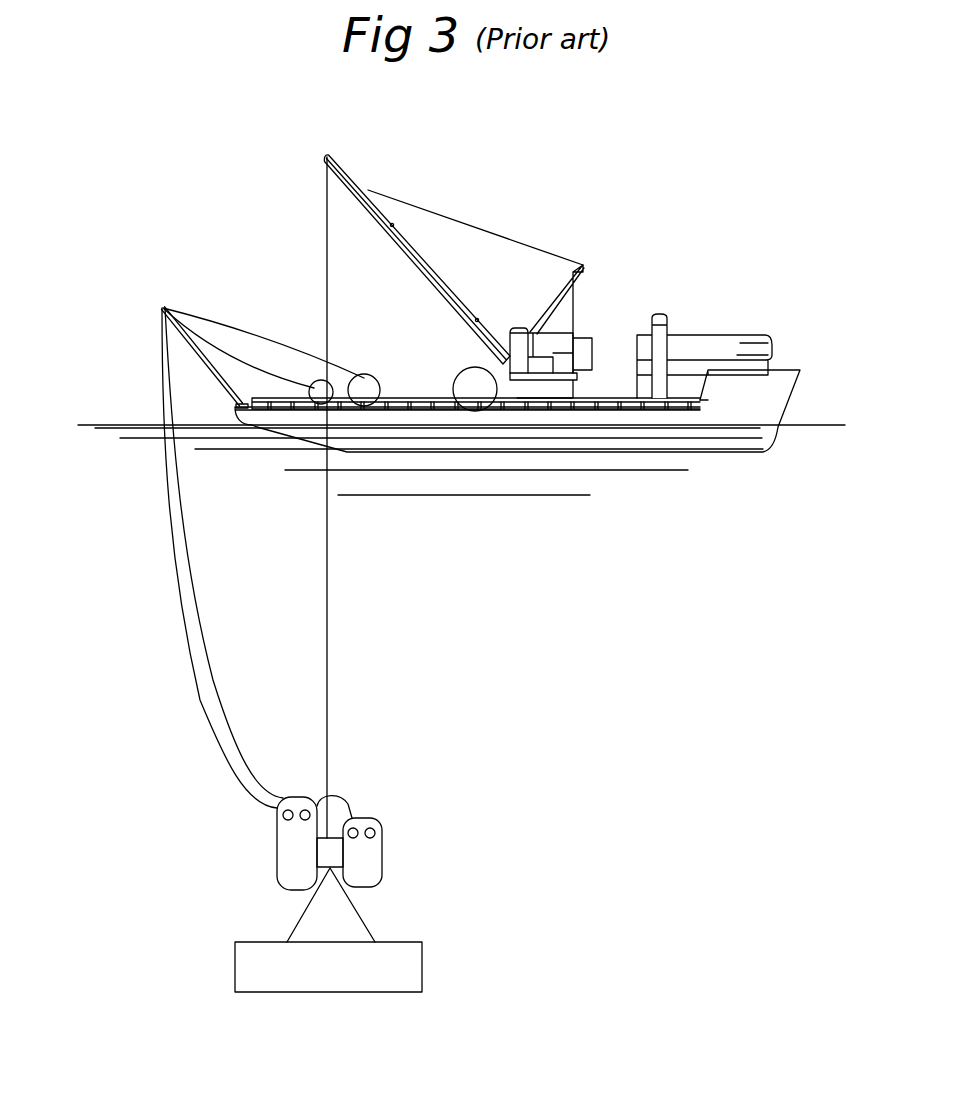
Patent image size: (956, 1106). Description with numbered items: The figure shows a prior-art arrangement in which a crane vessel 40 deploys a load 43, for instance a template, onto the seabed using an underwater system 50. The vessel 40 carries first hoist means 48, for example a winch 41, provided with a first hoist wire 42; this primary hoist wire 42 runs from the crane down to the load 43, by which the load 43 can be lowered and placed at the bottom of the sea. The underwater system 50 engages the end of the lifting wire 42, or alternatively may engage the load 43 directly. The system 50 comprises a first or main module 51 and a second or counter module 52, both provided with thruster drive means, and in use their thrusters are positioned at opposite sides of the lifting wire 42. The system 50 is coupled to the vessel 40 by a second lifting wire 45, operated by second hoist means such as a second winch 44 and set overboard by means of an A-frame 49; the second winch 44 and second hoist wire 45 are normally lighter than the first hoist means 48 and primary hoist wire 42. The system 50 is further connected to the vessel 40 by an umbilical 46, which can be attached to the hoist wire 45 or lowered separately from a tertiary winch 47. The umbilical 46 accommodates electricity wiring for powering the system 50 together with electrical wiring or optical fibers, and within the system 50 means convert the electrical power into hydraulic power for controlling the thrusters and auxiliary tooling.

The crane vessel 40 is at (618, 313).
The winch 41 is at (476, 385).
The first hoist wire 42 is at (329, 694).
The load 43 is at (272, 973).
The second winch 44 is at (368, 392).
The second lifting wire 45 is at (199, 623).
The umbilical 46 is at (223, 350).
The tertiary winch 47 is at (312, 388).
The first hoist means 48 is at (420, 237).
The A-frame 49 is at (202, 359).
The underwater system 50 is at (342, 824).
The main module 51 is at (300, 852).
The counter module 52 is at (365, 860).